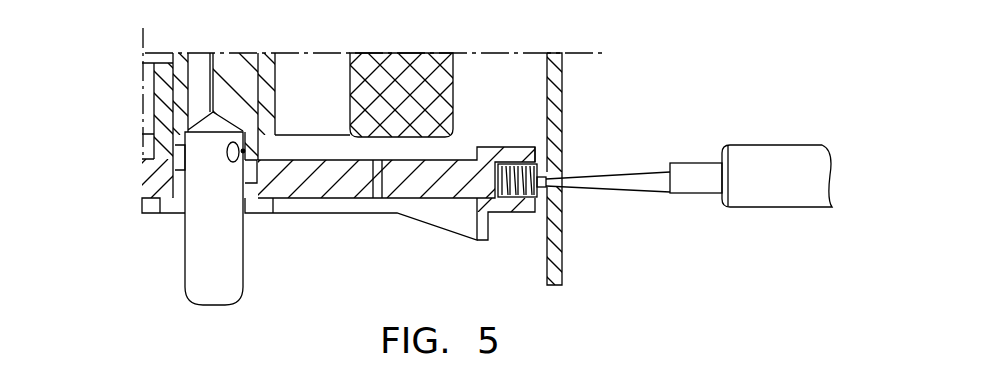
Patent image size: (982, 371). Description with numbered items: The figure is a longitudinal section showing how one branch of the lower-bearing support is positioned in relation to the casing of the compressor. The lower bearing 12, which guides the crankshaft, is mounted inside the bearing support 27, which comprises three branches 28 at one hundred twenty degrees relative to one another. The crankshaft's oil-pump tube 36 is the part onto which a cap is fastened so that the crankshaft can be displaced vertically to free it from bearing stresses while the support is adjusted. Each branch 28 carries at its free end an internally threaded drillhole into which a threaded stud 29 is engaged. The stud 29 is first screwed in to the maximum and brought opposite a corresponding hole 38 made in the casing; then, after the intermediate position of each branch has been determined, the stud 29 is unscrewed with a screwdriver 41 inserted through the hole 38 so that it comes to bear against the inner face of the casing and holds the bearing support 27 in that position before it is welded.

The lower bearing 12 is at (268, 90).
The oil-pump tube 36 is at (200, 250).
The bearing support 27 is at (310, 219).
The branch 28 is at (354, 183).
The threaded stud 29 is at (526, 205).
The hole 38 is at (557, 174).
The screwdriver 41 is at (707, 183).